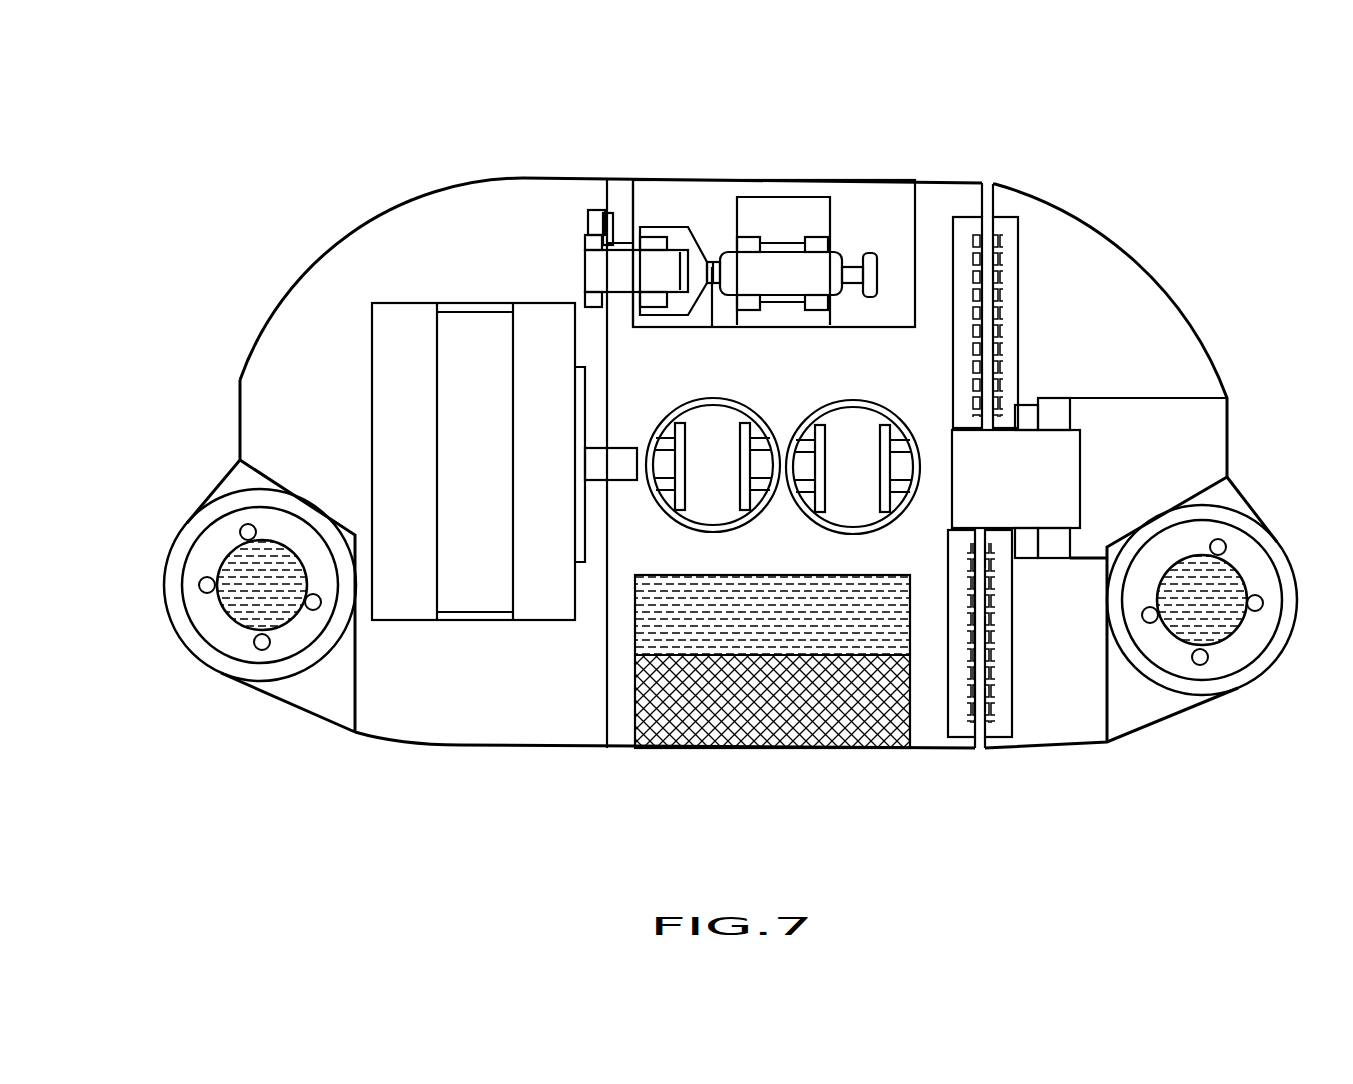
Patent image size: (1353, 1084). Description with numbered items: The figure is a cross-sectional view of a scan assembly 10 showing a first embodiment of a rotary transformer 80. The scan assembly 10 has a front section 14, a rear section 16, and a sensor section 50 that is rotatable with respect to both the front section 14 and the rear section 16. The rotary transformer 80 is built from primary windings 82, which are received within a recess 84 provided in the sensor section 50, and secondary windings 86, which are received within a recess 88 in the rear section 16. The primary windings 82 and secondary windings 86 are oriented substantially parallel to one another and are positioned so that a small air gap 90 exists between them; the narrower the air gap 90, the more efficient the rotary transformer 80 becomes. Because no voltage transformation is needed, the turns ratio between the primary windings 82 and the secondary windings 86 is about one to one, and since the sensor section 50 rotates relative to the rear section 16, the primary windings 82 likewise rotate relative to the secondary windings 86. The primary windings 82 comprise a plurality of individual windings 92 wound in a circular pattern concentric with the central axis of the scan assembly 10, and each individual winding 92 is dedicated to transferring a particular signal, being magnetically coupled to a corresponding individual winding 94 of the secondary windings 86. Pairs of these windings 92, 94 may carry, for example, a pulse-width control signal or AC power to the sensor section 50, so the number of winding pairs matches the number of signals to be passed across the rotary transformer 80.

The scan assembly 10 is at (705, 150).
The front section 14 is at (446, 697).
The rear section 16 is at (1167, 345).
The sensor section 50 is at (925, 737).
The rotary transformer 80 is at (994, 429).
The primary windings 82 is at (962, 300).
The recess 84 is at (952, 542).
The secondary windings 86 is at (1012, 274).
The recess 88 is at (1008, 342).
The air gap 90 is at (988, 190).
The individual winding 92 is at (975, 275).
The individual winding 94 is at (1000, 293).